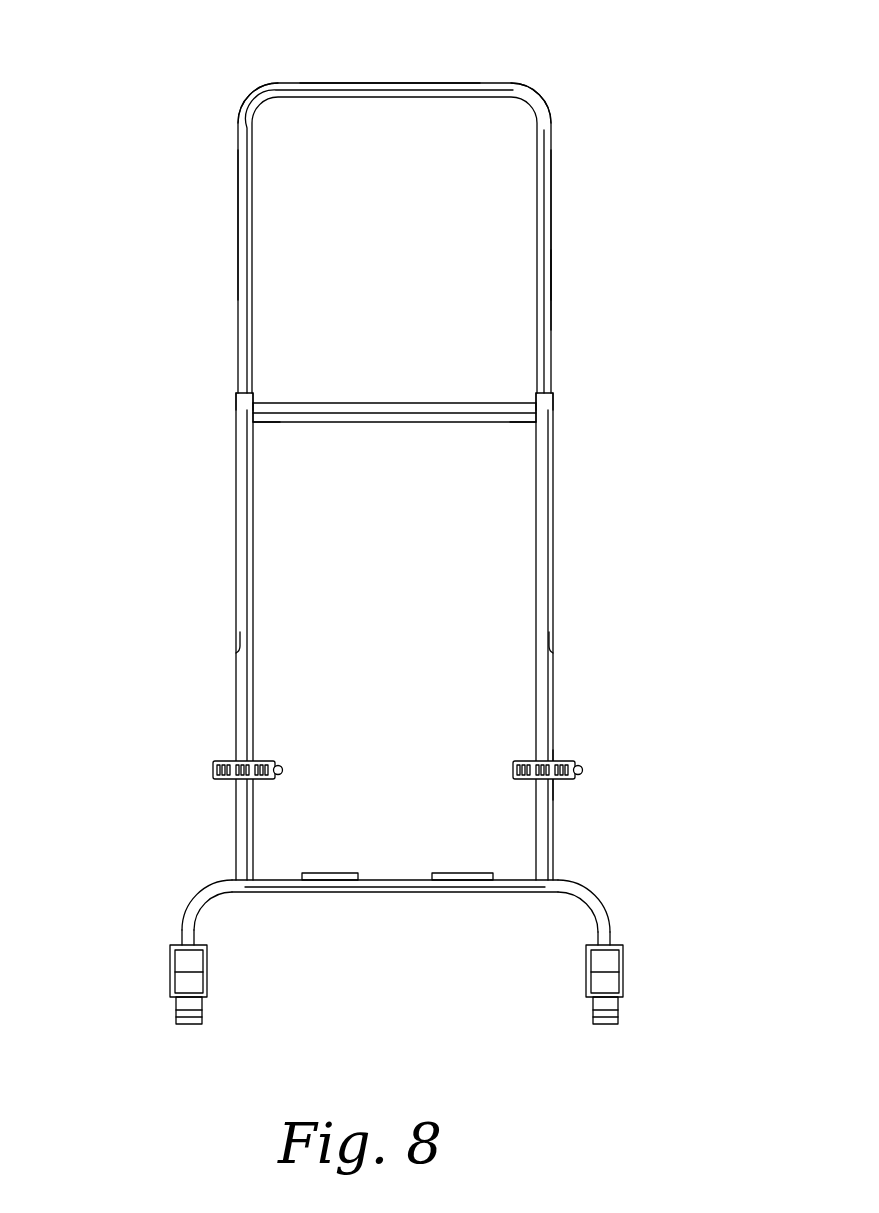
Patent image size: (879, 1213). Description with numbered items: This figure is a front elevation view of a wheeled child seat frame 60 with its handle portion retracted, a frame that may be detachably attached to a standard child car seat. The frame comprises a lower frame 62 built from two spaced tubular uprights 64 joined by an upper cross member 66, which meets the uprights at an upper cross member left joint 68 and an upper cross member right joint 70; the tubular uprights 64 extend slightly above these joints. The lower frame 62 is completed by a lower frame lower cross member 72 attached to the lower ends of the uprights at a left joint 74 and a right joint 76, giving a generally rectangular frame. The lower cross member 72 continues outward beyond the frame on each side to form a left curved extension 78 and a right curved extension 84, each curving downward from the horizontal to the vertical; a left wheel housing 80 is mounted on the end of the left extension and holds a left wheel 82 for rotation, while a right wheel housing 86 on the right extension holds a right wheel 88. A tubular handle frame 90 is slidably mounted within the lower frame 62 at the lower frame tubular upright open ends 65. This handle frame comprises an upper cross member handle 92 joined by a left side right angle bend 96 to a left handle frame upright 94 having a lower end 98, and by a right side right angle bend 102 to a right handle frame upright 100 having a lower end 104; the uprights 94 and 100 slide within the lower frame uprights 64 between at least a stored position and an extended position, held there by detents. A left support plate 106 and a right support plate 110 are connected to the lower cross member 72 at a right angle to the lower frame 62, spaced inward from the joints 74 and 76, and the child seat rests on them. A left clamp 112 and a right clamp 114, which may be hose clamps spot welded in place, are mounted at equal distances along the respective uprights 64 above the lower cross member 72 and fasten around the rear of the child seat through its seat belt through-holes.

The wheeled child seat frame 60 is at (607, 292).
The lower frame 62 is at (578, 737).
The tubular uprights 64 is at (253, 740).
The lower frame tubular upright open ends 65 is at (253, 393).
The upper cross member 66 is at (440, 405).
The upper cross member left joint 68 is at (253, 422).
The upper cross member right joint 70 is at (536, 422).
The lower frame lower cross member 72 is at (400, 893).
The left joint 74 is at (237, 878).
The right joint 76 is at (558, 878).
The left curved extension 78 is at (205, 887).
The left wheel housing 80 is at (170, 978).
The left wheel 82 is at (188, 1025).
The right curved extension 84 is at (608, 905).
The right wheel housing 86 is at (623, 968).
The right wheel 88 is at (618, 1015).
The tubular handle frame 90 is at (557, 155).
The upper cross member handle 92 is at (357, 83).
The left handle frame upright 94 is at (238, 215).
The left side right angle bend 96 is at (252, 98).
The lower end 98 is at (236, 650).
The right handle frame upright 100 is at (552, 262).
The right side right angle bend 102 is at (520, 85).
The lower end 104 is at (553, 650).
The left support plate 106 is at (327, 873).
The right support plate 110 is at (440, 873).
The left clamp 112 is at (513, 762).
The right clamp 114 is at (280, 776).